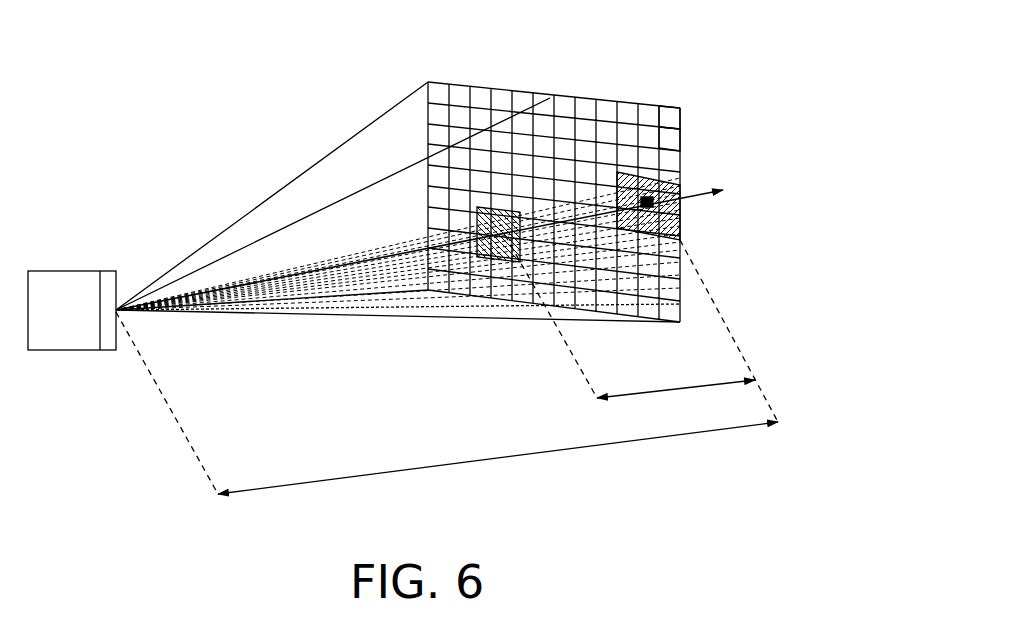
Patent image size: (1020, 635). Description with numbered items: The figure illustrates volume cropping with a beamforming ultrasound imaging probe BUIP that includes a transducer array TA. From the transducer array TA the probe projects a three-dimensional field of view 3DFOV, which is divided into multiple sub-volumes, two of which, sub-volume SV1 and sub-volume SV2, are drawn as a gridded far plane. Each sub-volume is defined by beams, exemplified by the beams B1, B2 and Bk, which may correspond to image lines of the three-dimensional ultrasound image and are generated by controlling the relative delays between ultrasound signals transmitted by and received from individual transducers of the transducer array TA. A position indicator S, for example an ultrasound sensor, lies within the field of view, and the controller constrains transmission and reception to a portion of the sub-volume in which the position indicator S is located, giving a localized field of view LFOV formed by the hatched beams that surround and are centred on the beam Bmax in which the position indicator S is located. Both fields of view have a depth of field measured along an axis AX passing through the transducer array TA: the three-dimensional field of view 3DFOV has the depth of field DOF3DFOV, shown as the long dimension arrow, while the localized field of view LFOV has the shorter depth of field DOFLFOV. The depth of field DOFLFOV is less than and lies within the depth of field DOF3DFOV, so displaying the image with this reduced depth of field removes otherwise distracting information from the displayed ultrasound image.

The three-dimensional field of view 3DFOV is at (273, 195).
The beamforming ultrasound imaging probe BUIP is at (72, 310).
The transducer array TA is at (107, 338).
The first sub-volume SV1 is at (566, 125).
The second sub-volume SV2 is at (460, 122).
The first beam B1 is at (677, 127).
The second beam B2 is at (673, 147).
The localized field of view LFOV is at (660, 172).
The position indicator S is at (663, 193).
The axis AX is at (440, 244).
The k-th beam Bk is at (563, 297).
The beam Bmax is at (600, 223).
The depth of field of the localized field of view DOFLFOV is at (675, 386).
The depth of field of the three-dimensional field of view DOF3DFOV is at (518, 458).